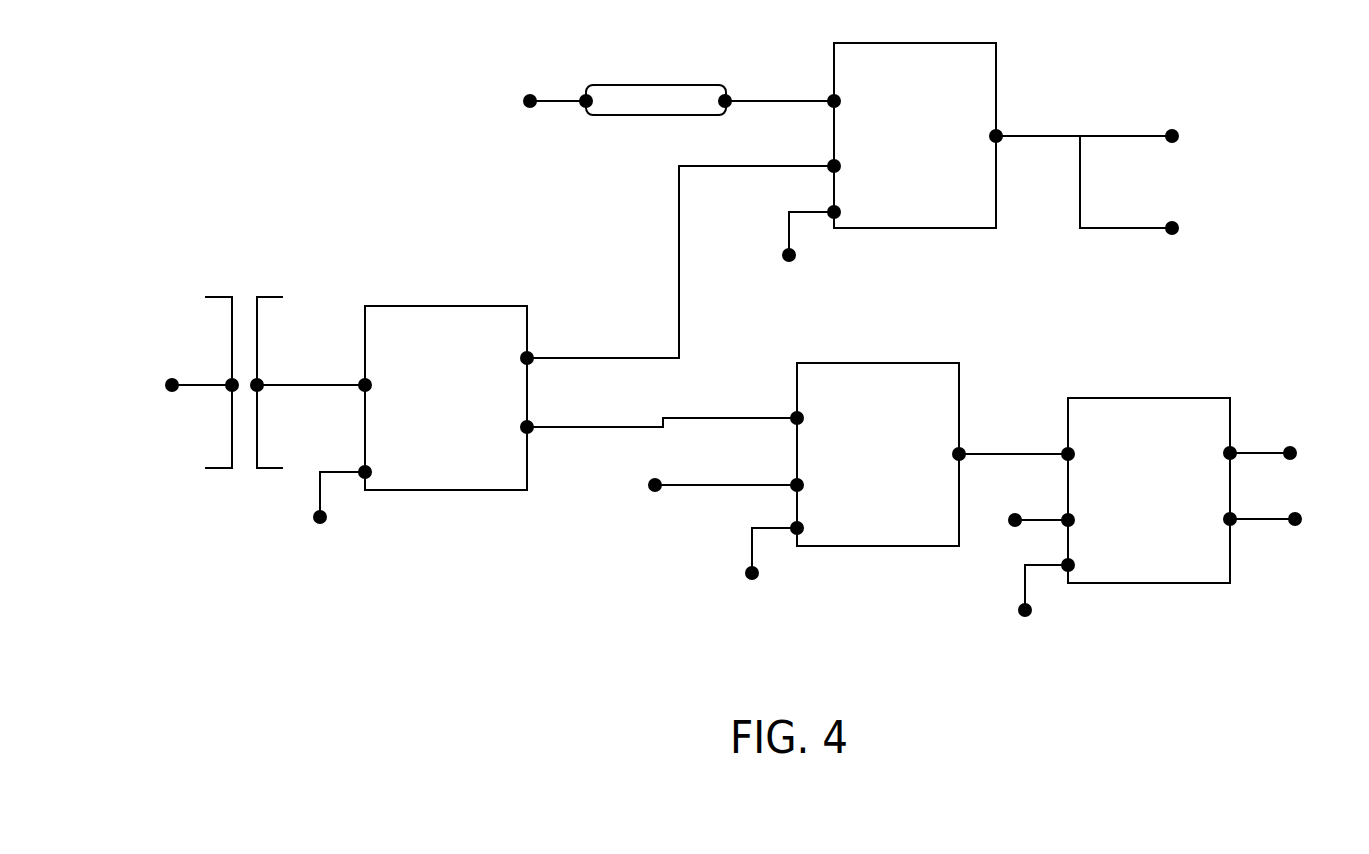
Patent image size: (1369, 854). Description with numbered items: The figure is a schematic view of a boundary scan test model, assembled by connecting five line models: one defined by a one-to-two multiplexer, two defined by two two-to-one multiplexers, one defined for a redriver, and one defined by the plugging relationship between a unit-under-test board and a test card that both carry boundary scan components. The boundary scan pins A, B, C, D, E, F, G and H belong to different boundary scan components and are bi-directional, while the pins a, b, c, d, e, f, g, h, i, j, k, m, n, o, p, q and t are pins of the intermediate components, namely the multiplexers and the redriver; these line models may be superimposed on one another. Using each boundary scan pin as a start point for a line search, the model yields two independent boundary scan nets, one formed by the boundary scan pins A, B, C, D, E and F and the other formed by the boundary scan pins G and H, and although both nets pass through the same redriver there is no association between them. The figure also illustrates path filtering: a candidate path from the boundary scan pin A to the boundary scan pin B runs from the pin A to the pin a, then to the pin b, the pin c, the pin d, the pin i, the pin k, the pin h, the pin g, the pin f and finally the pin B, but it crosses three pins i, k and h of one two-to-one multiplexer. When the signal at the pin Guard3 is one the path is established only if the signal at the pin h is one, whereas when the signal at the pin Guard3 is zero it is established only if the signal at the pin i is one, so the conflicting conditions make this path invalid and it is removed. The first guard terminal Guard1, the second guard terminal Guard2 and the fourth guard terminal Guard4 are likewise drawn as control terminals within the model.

The boundary scan pin A is at (158, 384).
The boundary scan pin B is at (517, 101).
The boundary scan pin C is at (642, 484).
The boundary scan pin D is at (1186, 134).
The boundary scan pin E is at (1184, 226).
The boundary scan pin F is at (1302, 453).
The boundary scan pin G is at (1002, 521).
The boundary scan pin H is at (1309, 520).
The pin a is at (222, 374).
The pin b is at (265, 374).
The pin c is at (359, 374).
The pin d is at (537, 347).
The pin e is at (537, 416).
The pin f is at (580, 89).
The pin g is at (731, 85).
The pin h is at (826, 88).
The pin i is at (827, 153).
The pin j is at (790, 404).
The pin k is at (1006, 123).
The pin m is at (973, 442).
The pin n is at (1060, 442).
The pin o is at (1237, 441).
The pin p is at (1062, 507).
The pin q is at (1238, 507).
The pin t is at (790, 472).
The guard terminal 1 Guard1 is at (1063, 609).
The guard terminal 2 Guard2 is at (356, 515).
The pin Guard3 is at (826, 255).
The guard terminal 4 Guard4 is at (790, 573).